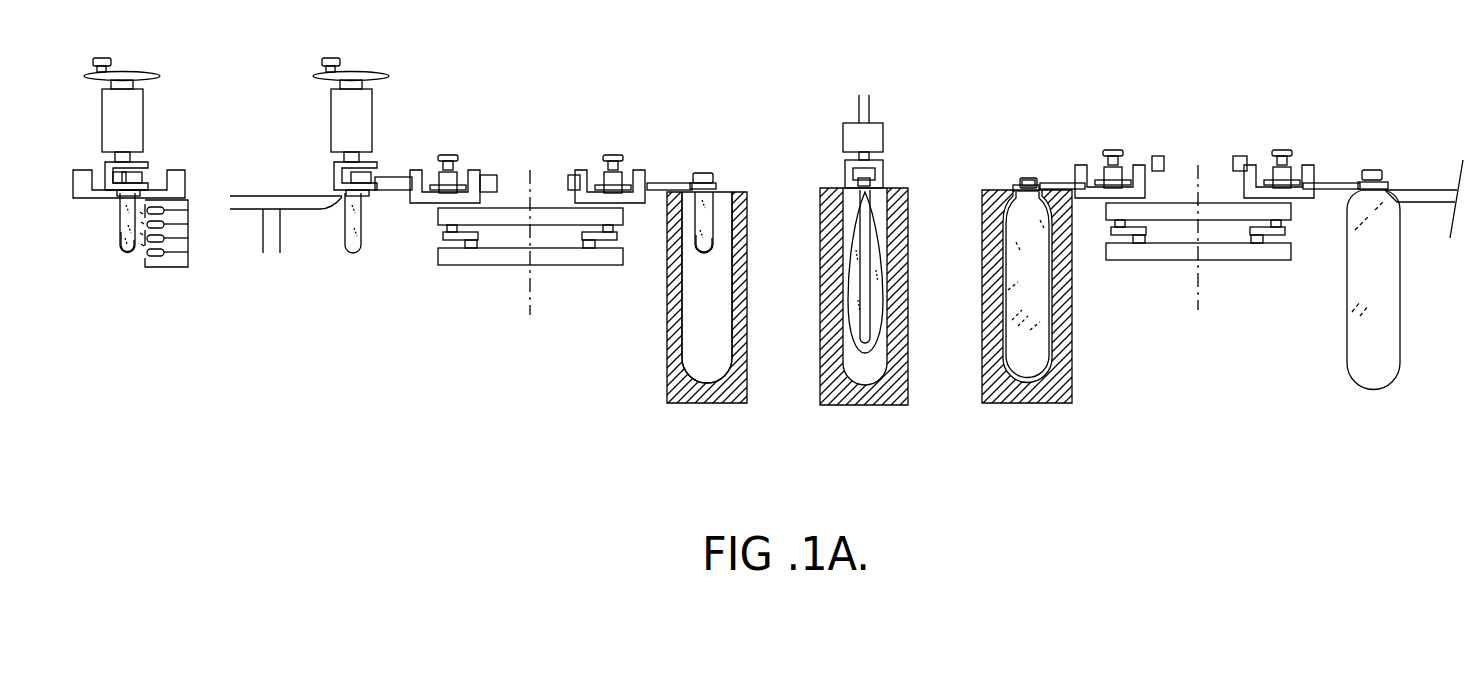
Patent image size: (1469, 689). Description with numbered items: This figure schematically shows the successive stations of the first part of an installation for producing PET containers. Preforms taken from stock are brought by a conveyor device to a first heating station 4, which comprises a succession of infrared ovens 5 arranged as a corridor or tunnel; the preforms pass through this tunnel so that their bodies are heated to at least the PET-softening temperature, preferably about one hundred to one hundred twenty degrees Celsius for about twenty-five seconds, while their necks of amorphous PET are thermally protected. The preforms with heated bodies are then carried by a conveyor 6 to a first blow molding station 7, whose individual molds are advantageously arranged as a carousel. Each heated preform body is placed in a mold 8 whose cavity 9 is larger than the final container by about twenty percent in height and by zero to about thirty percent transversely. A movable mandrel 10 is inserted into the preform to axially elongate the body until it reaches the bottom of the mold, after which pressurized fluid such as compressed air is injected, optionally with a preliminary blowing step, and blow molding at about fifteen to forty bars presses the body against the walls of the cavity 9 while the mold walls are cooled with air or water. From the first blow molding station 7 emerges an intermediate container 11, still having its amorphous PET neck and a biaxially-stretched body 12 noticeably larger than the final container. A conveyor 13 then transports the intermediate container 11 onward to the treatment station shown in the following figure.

The first heating station 4 is at (242, 210).
The infrared oven 5 is at (160, 253).
The conveyor 6 is at (478, 276).
The first blow molding station 7 is at (1018, 286).
The mold 8 is at (670, 321).
The cavity 9 is at (690, 349).
The movable mandrel 10 is at (868, 226).
The intermediate container 11 is at (1015, 226).
The biaxially-stretched body 12 is at (1064, 295).
The conveyor 13 is at (1243, 320).